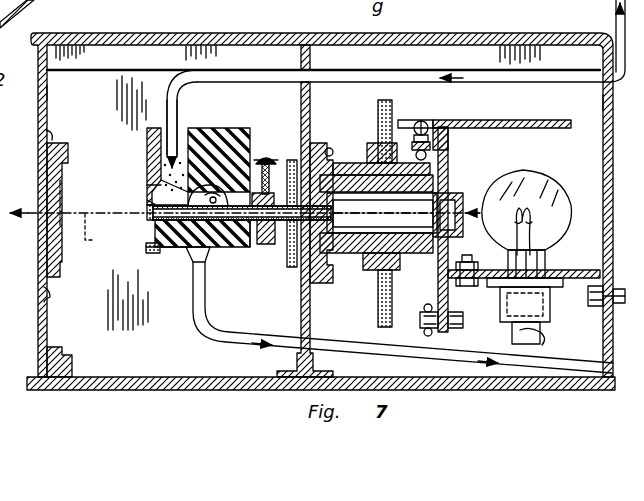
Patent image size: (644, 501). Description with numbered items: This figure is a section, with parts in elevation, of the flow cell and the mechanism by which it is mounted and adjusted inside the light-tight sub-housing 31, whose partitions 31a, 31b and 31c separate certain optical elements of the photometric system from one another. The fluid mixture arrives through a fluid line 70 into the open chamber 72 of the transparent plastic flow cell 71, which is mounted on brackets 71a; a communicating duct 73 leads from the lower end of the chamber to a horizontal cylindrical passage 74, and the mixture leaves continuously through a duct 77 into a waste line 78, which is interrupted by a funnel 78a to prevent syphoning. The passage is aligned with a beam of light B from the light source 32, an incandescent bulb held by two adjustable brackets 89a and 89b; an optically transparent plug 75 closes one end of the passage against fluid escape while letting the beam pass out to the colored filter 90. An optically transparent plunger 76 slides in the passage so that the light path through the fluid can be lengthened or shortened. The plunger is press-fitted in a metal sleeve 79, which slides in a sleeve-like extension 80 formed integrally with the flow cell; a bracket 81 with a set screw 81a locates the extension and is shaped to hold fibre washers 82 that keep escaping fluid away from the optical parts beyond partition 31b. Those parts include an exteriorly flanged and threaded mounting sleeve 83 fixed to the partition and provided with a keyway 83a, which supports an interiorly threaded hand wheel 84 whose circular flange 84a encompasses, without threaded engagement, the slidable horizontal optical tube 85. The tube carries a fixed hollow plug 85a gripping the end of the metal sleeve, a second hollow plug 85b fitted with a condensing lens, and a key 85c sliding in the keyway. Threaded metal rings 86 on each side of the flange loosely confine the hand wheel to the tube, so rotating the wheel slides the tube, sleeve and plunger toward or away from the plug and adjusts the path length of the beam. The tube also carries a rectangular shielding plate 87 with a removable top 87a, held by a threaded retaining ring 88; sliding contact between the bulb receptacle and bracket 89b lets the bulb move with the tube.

The light-tight sub-housing 31 is at (584, 32).
The partition 31a is at (603, 102).
The partition 31b is at (311, 58).
The partition 31c is at (48, 92).
The light source 32 is at (576, 176).
The fluid line 70 is at (278, 76).
The flow cell 71 is at (152, 128).
The brackets 71a is at (147, 243).
The open chamber 72 is at (181, 120).
The communicating duct 73 is at (146, 186).
The horizontal cylindrical passage 74 is at (168, 247).
The optically transparent plug 75 is at (147, 203).
The optically transparent plunger 76 is at (242, 254).
The duct 77 is at (208, 182).
The waste line 78 is at (276, 330).
The funnel 78a is at (192, 268).
The metal sleeve 79 is at (236, 248).
The sleeve-like extension 80 is at (266, 248).
The bracket 81 is at (270, 156).
The set screw 81a is at (258, 156).
The fibre washers 82 is at (292, 160).
The mounting sleeve 83 is at (330, 158).
The keyway 83a is at (348, 172).
The hand wheel 84 is at (378, 108).
The circular flange 84a is at (418, 122).
The optical tube 85 is at (350, 262).
The hollow plug 85a is at (332, 220).
The hollow plug 85b is at (410, 222).
The key 85c is at (408, 120).
The threaded metal rings 86 is at (436, 214).
The rectangular plate 87 is at (449, 160).
The removable top 87a is at (508, 122).
The threaded retaining ring 88 is at (524, 215).
The adjustable bracket 89a is at (466, 270).
The adjustable bracket 89b is at (600, 282).
The colored filter 90 is at (60, 186).
The light beam B is at (97, 232).